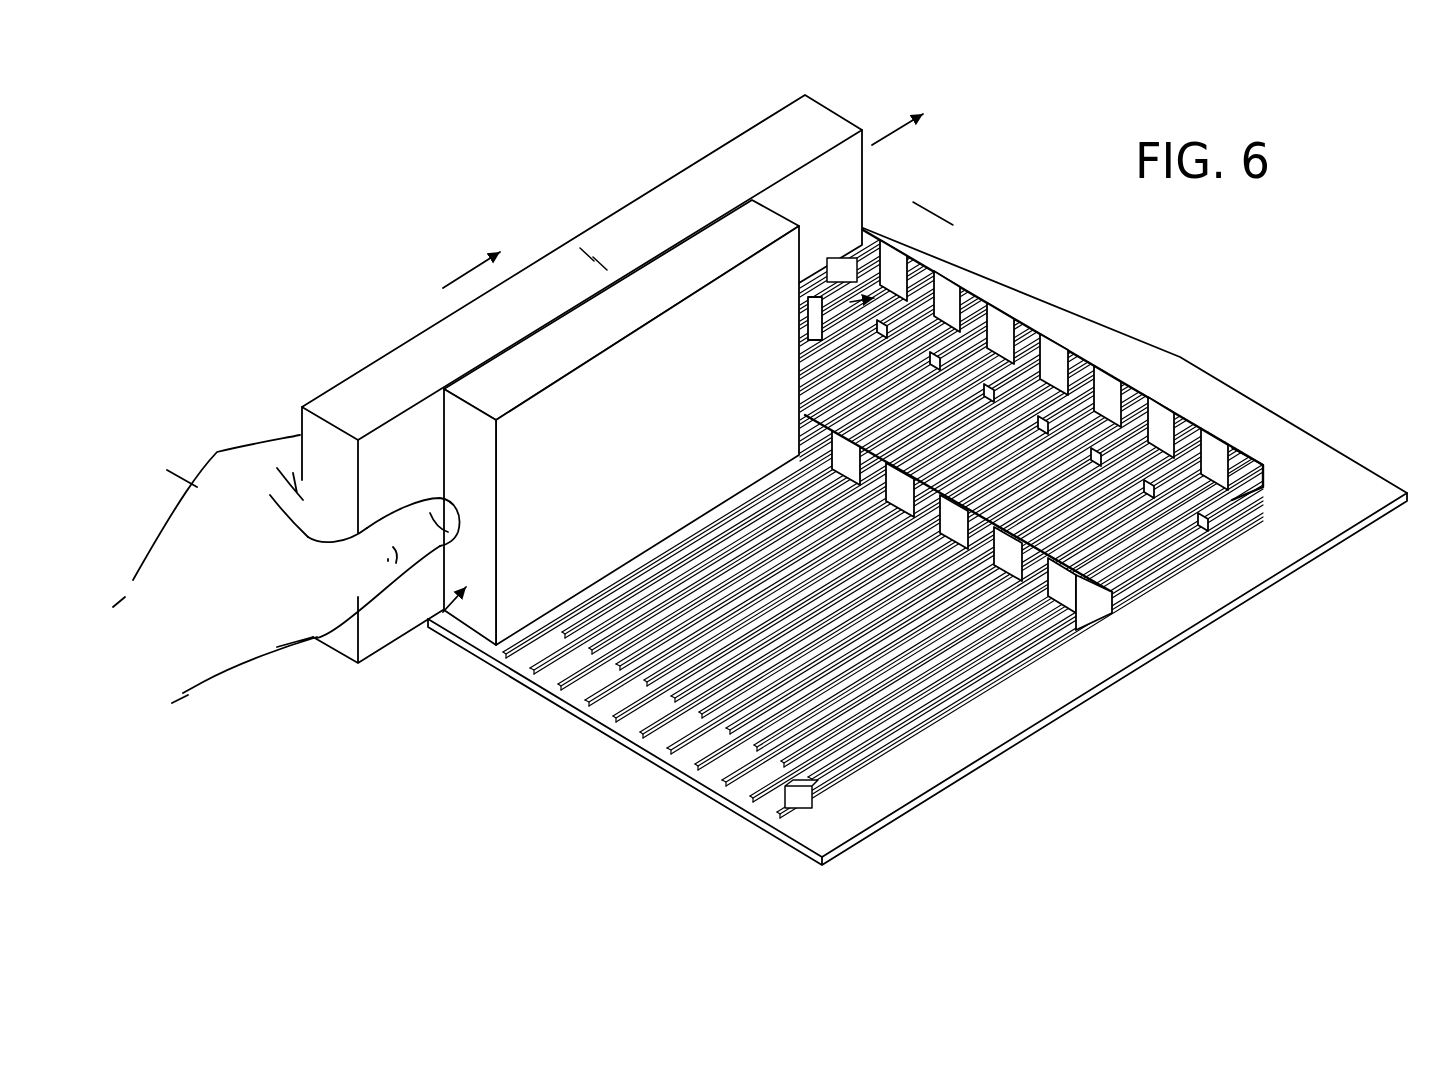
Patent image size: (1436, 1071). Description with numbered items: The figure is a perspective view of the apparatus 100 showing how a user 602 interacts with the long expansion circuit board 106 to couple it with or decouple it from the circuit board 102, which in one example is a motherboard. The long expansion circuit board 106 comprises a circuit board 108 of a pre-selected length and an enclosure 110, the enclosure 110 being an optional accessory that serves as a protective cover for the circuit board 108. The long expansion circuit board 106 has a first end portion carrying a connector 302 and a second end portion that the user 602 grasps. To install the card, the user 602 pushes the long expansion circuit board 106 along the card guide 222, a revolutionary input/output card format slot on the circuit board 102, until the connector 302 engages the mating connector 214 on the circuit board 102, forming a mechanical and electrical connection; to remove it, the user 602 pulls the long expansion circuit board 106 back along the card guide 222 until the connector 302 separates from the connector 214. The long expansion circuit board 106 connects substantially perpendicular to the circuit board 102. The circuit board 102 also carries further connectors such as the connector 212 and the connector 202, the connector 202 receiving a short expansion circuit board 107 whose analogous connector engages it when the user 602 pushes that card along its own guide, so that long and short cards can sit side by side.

The apparatus 100 is at (331, 291).
The circuit board 102 is at (1372, 437).
The long expansion circuit board 106 is at (352, 410).
The short expansion circuit board 107 is at (443, 612).
The circuit board 108 is at (745, 137).
The enclosure 110 is at (825, 128).
The connector 202 is at (798, 433).
The connector 212 is at (945, 292).
The connector 214 is at (887, 260).
The card guide 222 is at (937, 268).
The connector 302 is at (808, 322).
The user 602 is at (230, 648).